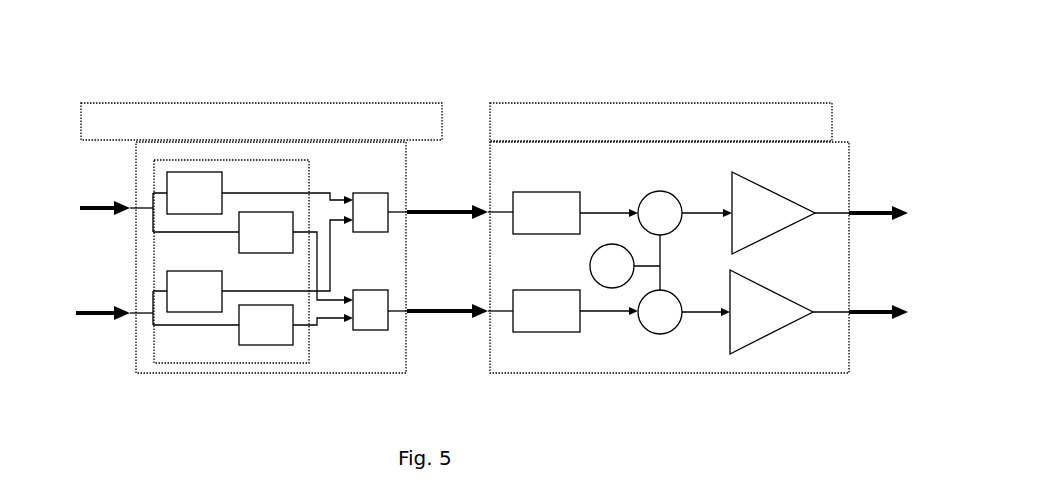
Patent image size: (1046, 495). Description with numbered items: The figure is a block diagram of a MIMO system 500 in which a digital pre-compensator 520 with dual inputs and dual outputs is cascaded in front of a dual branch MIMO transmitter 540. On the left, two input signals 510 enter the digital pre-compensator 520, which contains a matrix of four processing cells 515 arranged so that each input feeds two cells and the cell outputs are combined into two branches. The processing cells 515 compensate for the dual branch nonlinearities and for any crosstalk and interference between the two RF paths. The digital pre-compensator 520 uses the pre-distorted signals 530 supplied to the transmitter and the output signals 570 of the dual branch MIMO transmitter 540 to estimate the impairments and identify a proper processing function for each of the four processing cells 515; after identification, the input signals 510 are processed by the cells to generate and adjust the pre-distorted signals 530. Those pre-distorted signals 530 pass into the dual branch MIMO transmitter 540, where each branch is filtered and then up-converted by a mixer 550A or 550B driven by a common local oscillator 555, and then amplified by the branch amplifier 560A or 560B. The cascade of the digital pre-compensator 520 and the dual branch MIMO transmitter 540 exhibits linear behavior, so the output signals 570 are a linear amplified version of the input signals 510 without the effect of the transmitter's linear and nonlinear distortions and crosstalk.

The MIMO system 500 is at (443, 78).
The input signals 510 is at (93, 330).
The processing cells 515 is at (310, 170).
The digital pre-compensator 520 is at (270, 373).
The pre-distorted signals 530 is at (425, 205).
The dual branch MIMO transmitter 540 is at (657, 373).
The mixer 550A is at (660, 190).
The mixer 550B is at (660, 335).
The local oscillator 555 is at (590, 252).
The transmitter amplifier 560A is at (775, 188).
The transmitter amplifier 560B is at (775, 285).
The output signals 570 is at (862, 340).